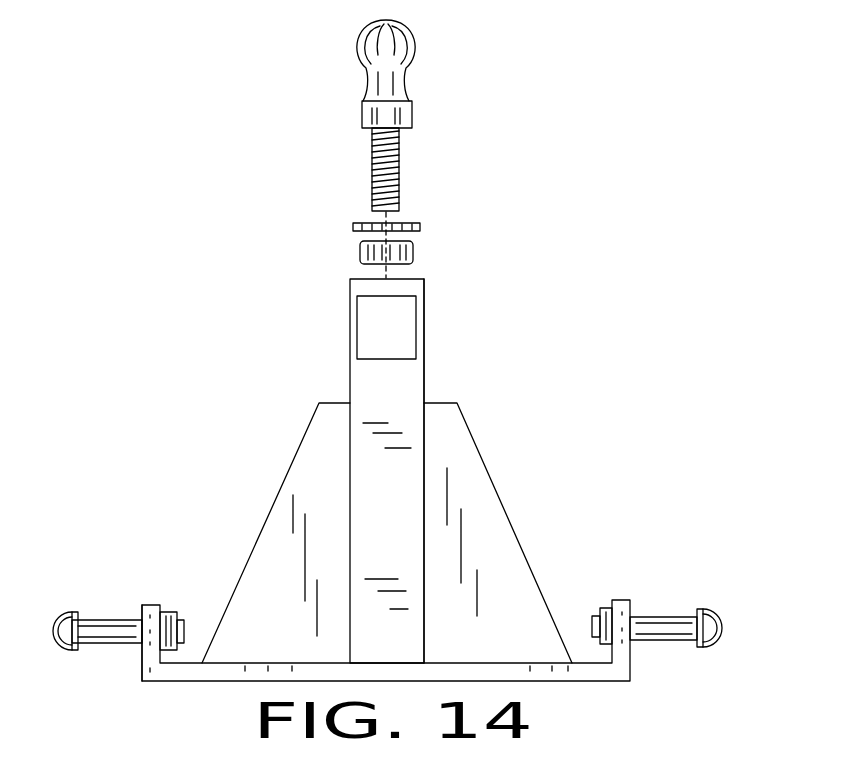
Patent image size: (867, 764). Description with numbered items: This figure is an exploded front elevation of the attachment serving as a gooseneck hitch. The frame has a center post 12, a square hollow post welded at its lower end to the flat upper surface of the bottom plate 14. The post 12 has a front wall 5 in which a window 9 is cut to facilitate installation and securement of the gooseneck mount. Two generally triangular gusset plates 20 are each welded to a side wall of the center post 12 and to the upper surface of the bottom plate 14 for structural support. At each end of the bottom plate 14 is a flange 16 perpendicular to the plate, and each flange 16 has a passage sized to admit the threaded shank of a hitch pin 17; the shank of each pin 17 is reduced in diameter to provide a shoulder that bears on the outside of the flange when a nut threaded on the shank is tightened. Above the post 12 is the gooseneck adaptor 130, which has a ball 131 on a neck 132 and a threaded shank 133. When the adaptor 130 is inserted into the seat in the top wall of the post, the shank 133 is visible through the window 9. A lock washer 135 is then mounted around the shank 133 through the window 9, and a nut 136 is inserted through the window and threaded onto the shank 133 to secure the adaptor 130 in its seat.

The gooseneck adaptor 130 is at (406, 69).
The ball 131 is at (397, 45).
The neck 132 is at (367, 88).
The threaded shank 133 is at (372, 170).
The lock washer 135 is at (418, 227).
The nut 136 is at (360, 253).
The window 9 is at (368, 318).
The front wall 5 is at (370, 378).
The center post 12 is at (425, 376).
The gusset plates 20 is at (465, 472).
The bottom plate 14 is at (203, 683).
The flanges 16 is at (151, 605).
The hitch pin 17 is at (112, 620).